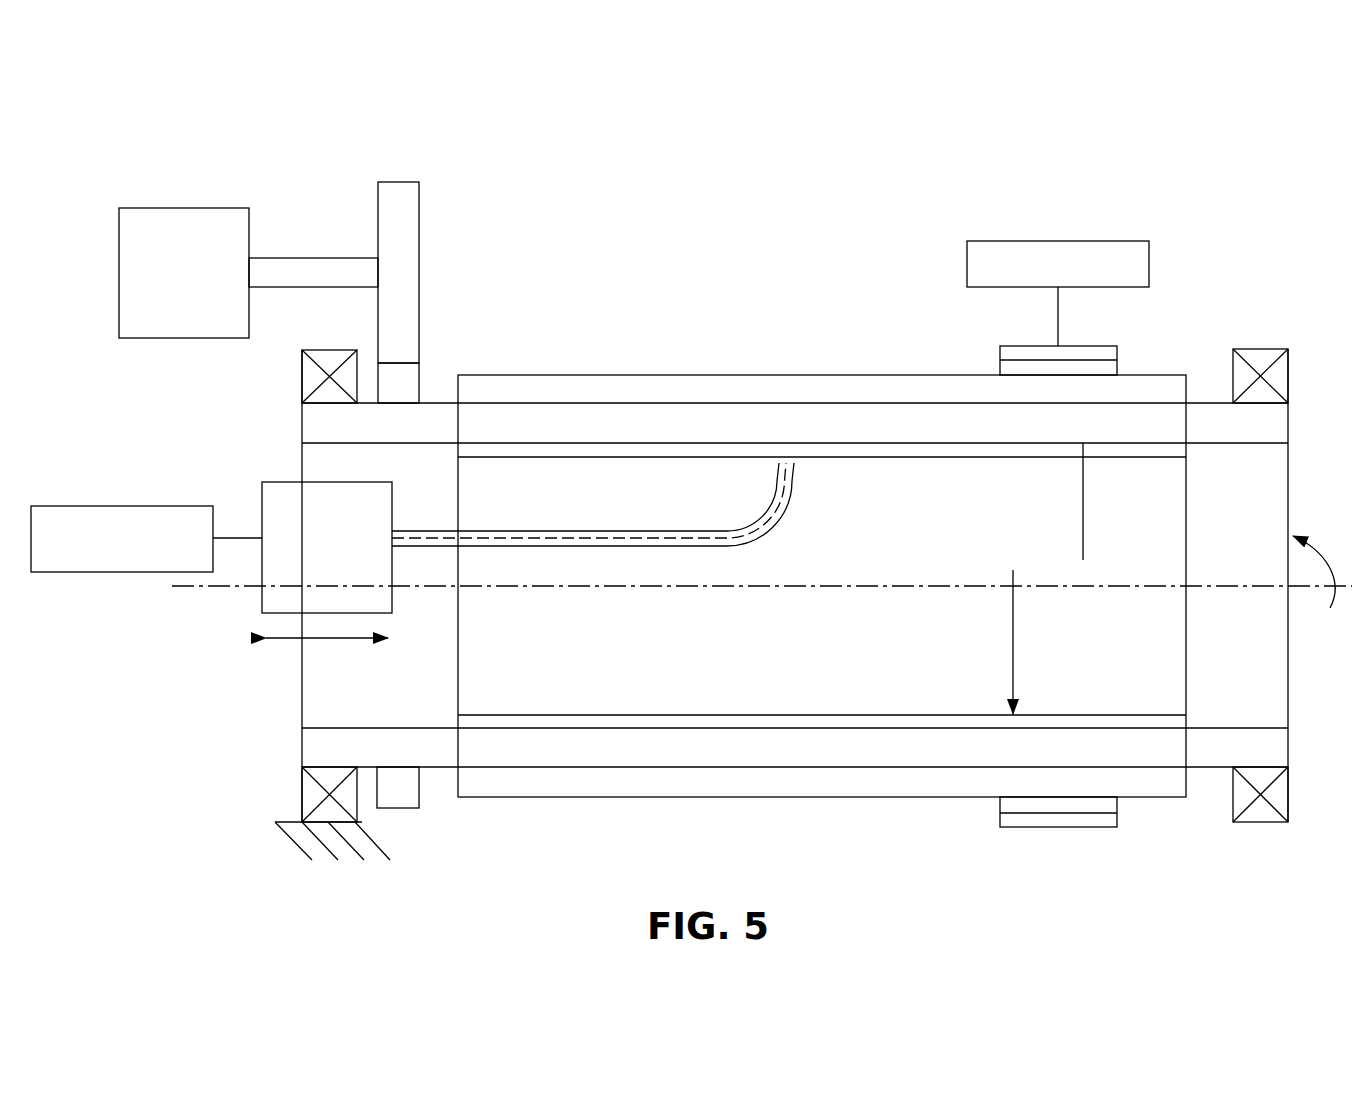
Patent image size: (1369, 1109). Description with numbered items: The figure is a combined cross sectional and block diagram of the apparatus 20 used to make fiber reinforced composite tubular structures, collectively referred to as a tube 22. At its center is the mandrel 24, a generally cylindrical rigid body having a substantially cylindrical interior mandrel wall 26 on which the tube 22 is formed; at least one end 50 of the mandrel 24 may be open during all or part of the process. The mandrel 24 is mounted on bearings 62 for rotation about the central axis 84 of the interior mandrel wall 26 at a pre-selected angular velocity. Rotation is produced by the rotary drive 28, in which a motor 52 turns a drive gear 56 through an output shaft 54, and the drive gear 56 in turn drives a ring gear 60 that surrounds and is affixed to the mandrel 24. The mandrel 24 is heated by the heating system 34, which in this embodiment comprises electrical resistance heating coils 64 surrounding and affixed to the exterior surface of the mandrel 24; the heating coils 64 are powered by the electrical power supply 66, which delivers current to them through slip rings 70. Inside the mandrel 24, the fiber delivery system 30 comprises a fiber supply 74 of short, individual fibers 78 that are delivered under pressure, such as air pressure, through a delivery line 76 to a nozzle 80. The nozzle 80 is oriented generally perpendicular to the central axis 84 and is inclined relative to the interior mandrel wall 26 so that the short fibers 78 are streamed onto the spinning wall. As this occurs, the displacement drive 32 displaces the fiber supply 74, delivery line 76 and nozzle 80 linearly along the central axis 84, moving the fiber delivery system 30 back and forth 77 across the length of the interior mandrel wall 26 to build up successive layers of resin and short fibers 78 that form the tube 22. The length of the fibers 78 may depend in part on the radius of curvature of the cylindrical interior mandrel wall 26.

The apparatus 20 is at (760, 552).
The tube 22 is at (1083, 560).
The mandrel 24 is at (757, 425).
The interior mandrel wall 26 is at (1246, 452).
The rotary drive 28 is at (300, 238).
The fiber delivery system 30 is at (476, 509).
The displacement drive 32 is at (120, 572).
The heating system 34 is at (900, 552).
The end 50 is at (321, 460).
The motor 52 is at (158, 208).
The output shaft 54 is at (314, 258).
The drive gear 56 is at (397, 230).
The ring gear 60 is at (403, 383).
The bearings 62 is at (1258, 362).
The heating coils 64 is at (868, 388).
The electrical power supply 66 is at (1058, 241).
The slip rings 70 is at (1073, 803).
The fiber supply 74 is at (262, 503).
The delivery line 76 is at (656, 486).
The back and forth displacement 77 is at (328, 640).
The fibers 78 is at (641, 538).
The nozzle 80 is at (804, 498).
The central axis 84 is at (230, 586).